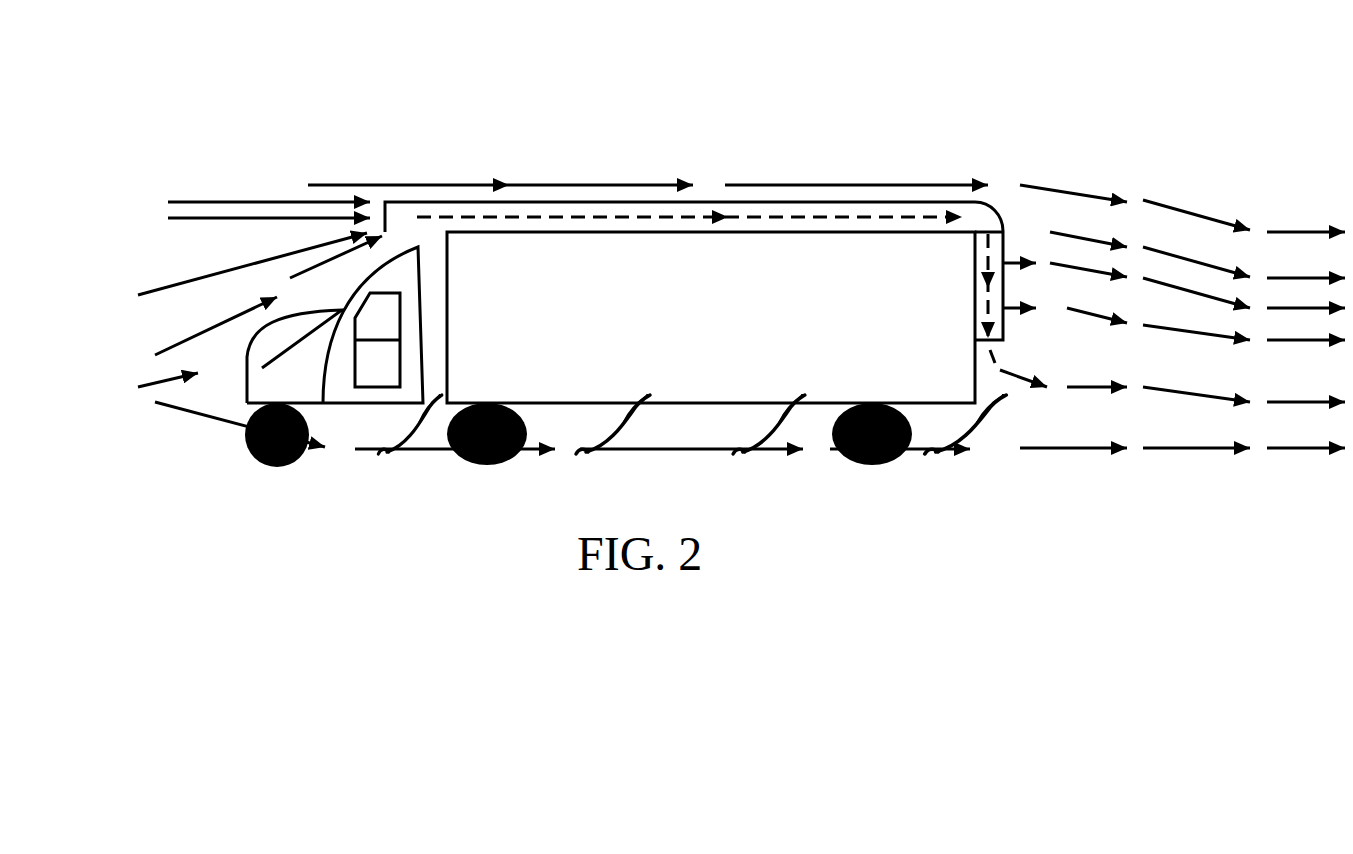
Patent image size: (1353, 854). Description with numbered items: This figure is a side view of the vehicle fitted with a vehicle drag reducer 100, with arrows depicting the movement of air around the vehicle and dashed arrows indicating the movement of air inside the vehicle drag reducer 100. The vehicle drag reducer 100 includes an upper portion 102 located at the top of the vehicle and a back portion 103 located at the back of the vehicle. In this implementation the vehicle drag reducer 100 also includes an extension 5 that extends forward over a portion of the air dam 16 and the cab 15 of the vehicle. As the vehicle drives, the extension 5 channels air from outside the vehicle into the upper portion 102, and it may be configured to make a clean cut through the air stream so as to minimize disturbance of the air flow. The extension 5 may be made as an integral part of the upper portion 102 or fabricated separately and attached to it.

The extension 5 is at (402, 215).
The cab 15 is at (385, 323).
The air dam 16 is at (399, 262).
The vehicle drag reducer 100 is at (710, 202).
The upper portion 102 is at (850, 203).
The back portion 103 is at (1007, 262).